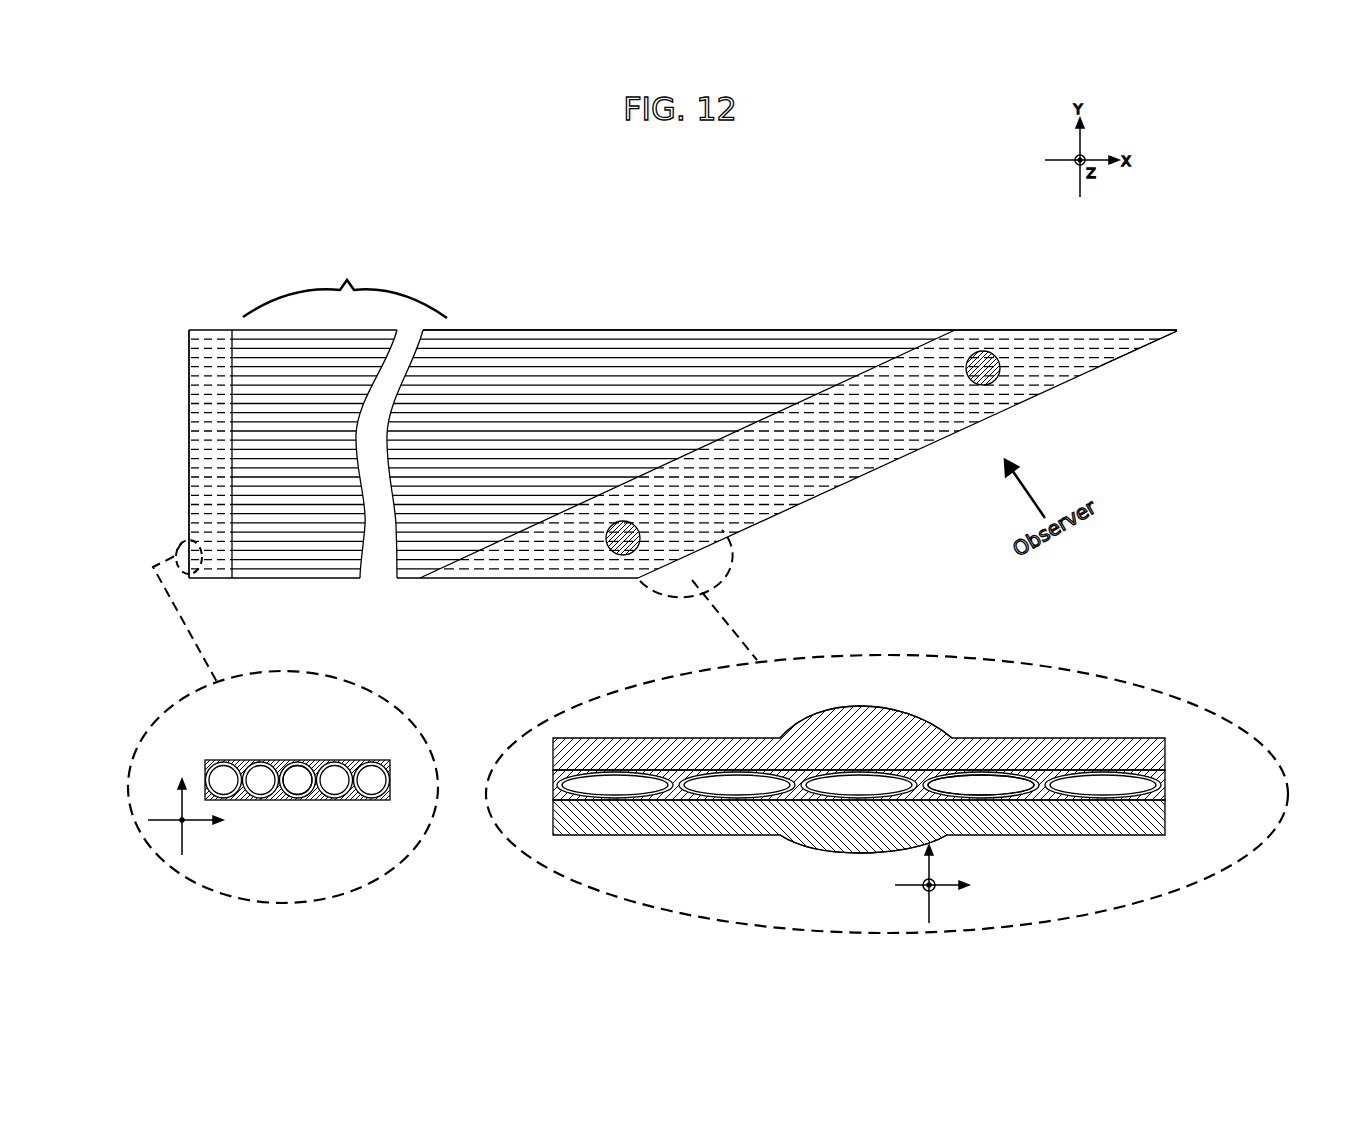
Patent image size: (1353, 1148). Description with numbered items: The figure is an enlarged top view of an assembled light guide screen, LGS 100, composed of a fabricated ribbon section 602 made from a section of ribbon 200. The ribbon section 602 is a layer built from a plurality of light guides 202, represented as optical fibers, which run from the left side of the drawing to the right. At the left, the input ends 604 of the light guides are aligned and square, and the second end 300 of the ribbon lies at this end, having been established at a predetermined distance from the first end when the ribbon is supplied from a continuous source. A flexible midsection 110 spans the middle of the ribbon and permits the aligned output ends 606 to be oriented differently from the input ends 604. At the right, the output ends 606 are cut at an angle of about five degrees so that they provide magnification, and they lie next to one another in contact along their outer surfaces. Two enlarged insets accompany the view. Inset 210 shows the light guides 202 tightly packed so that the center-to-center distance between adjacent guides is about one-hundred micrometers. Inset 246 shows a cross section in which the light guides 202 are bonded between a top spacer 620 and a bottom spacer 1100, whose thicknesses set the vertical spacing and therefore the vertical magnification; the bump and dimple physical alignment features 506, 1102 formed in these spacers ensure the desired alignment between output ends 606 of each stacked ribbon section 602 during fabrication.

The light guide screen 100 is at (799, 228).
The flexible midsection 110 is at (345, 284).
The ribbon 200 is at (540, 330).
The light guides 202 is at (297, 776).
The inset 210 is at (292, 672).
The cross-sectional detail region 246 is at (667, 672).
The second end 300 is at (213, 362).
The physical alignment feature 506 is at (990, 358).
The ribbon section 602 is at (623, 316).
The input ends 604 is at (184, 332).
The output ends 606 is at (1174, 347).
The top spacer 620 is at (920, 355).
The bottom spacer 1100 is at (1167, 820).
The physical alignment feature 1102 is at (828, 813).